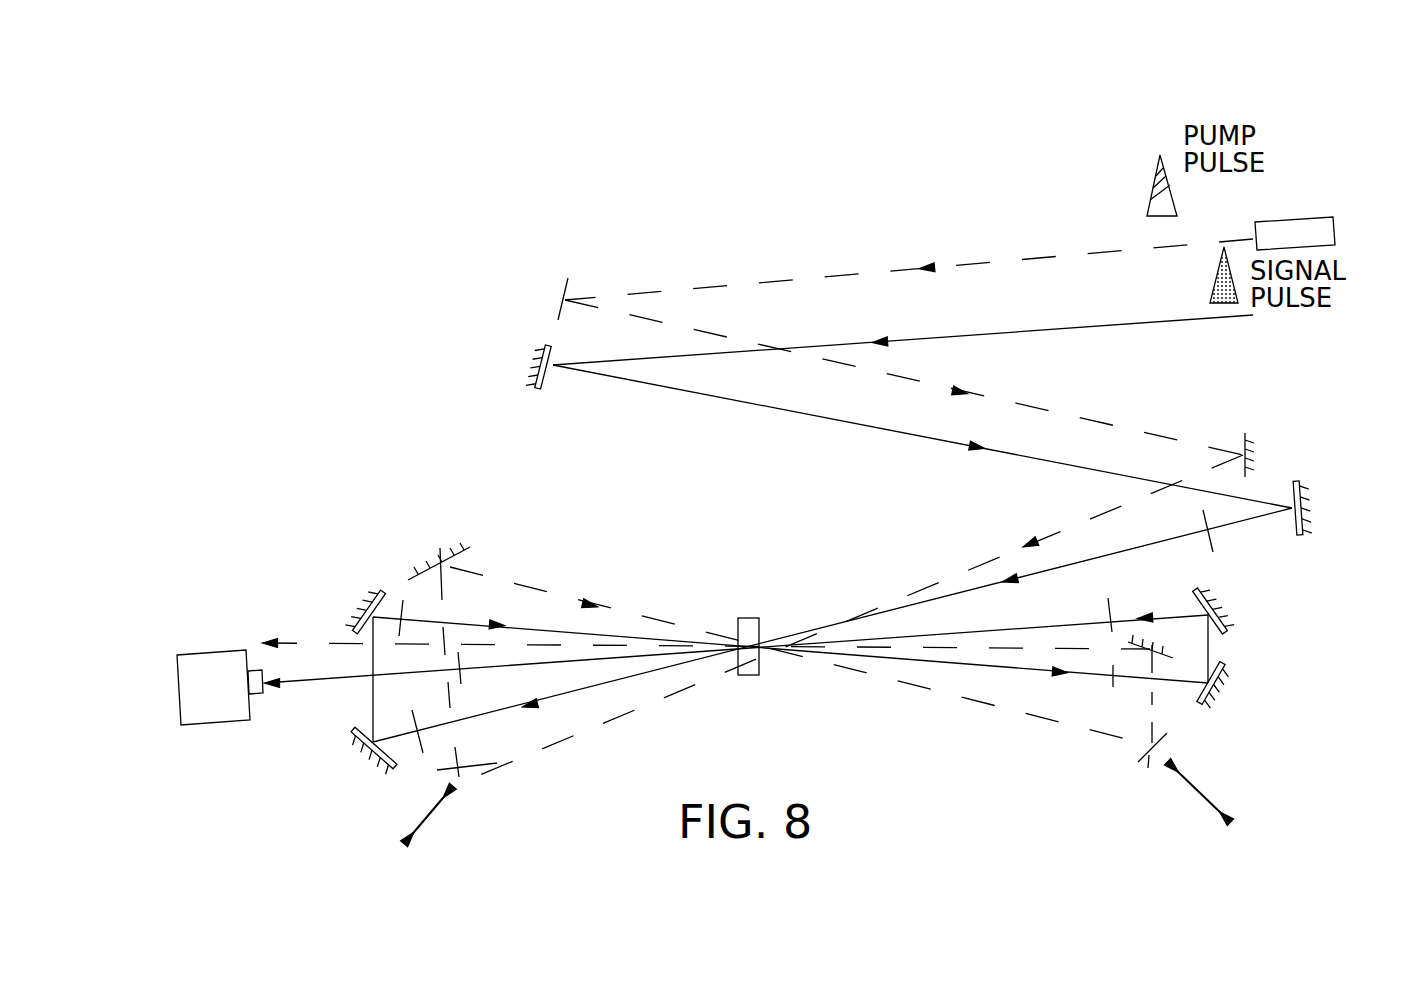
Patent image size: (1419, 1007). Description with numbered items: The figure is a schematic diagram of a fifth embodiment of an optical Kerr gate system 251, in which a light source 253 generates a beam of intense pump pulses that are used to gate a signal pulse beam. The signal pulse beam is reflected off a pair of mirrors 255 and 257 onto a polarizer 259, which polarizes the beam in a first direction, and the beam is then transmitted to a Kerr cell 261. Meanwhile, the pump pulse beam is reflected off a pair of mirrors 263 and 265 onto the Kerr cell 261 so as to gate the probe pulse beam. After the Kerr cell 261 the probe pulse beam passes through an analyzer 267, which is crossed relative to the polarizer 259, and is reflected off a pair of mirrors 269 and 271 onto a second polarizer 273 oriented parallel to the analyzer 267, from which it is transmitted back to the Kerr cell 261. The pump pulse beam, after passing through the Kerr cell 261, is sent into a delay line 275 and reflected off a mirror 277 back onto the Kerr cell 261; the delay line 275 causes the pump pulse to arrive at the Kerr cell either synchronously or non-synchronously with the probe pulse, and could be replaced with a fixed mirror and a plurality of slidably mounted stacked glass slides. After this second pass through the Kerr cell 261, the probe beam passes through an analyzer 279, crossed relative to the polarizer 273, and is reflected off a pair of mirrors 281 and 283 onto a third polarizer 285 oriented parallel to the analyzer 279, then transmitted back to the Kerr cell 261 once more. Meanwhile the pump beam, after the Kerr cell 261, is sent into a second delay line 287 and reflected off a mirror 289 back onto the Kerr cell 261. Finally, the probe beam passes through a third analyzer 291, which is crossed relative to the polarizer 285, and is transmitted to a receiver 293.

The optical Kerr gate system 251 is at (707, 172).
The light source 253 is at (1330, 235).
The mirror 255 is at (540, 365).
The mirror 257 is at (1306, 492).
The polarizer 259 is at (1214, 546).
The Kerr cell 261 is at (749, 618).
The mirror 263 is at (566, 298).
The mirror 265 is at (1247, 440).
The analyzer 267 is at (434, 697).
The mirror 269 is at (368, 768).
The mirror 271 is at (370, 600).
The second polarizer 273 is at (400, 602).
The delay line 275 is at (470, 783).
The mirror 277 is at (446, 548).
The analyzer 279 is at (1113, 682).
The mirror 281 is at (1225, 690).
The mirror 283 is at (1230, 606).
The third polarizer 285 is at (1112, 607).
The delay line 287 is at (1173, 779).
The mirror 289 is at (1175, 655).
The third analyzer 291 is at (462, 680).
The receiver 293 is at (216, 665).